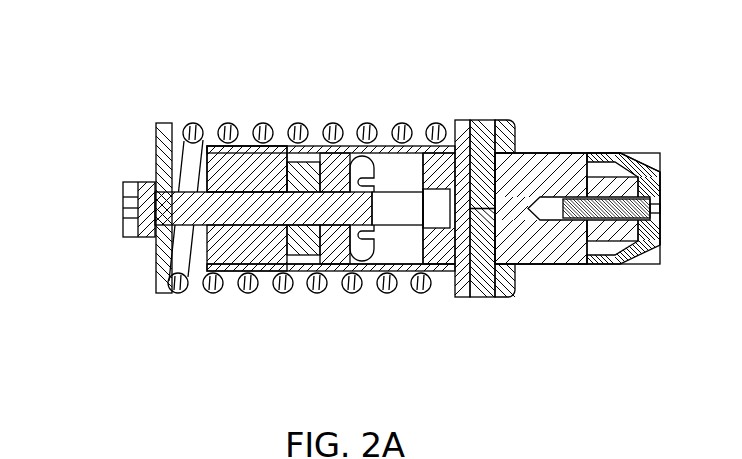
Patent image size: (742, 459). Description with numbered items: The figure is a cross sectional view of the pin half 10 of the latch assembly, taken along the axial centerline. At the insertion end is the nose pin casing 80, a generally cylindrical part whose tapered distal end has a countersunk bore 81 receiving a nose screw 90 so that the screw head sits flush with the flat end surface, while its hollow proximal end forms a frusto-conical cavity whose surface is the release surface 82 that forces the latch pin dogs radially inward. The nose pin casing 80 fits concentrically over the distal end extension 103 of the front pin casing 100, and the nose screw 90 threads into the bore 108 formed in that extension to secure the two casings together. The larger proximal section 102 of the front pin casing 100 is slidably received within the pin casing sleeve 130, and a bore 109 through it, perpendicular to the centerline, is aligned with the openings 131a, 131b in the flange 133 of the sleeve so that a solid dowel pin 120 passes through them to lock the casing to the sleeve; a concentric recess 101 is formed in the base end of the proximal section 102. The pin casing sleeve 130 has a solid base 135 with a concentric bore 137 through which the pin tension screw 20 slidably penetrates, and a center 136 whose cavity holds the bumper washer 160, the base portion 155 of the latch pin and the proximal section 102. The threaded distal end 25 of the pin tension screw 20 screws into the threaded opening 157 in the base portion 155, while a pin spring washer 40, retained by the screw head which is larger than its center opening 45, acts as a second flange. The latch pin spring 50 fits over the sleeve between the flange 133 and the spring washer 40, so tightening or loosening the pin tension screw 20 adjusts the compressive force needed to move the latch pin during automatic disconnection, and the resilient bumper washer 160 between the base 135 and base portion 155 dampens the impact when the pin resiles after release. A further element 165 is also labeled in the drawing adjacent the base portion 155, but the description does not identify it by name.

The pin half 10 is at (295, 72).
The pin tension screw 20 is at (123, 226).
The distal end of pin tension screw 25 is at (392, 180).
The pin spring washer 40 is at (160, 126).
The center opening 45 is at (130, 183).
The latch pin spring 50 is at (272, 282).
The nose pin casing 80 is at (662, 173).
The bore 81 is at (662, 243).
The release surface 82 is at (642, 164).
The nose screw 90 is at (662, 199).
The front pin casing 100 is at (583, 262).
The concentric recess 101 is at (438, 216).
The proximal section 102 is at (553, 168).
The distal end extension 103 is at (613, 177).
The bore 108 is at (535, 214).
The bore 109 is at (498, 235).
The solid dowel pin 120 is at (480, 120).
The pin casing sleeve 130 is at (302, 150).
The opening 131a is at (490, 122).
The opening 131b is at (474, 297).
The flange 133 is at (458, 120).
The pin casing sleeve base 135 is at (245, 148).
The center 136 is at (413, 150).
The concentric bore 137 is at (200, 136).
The base portion 155 is at (342, 250).
The threaded opening 157 is at (327, 190).
The bumper washer 160 is at (278, 280).
The seal 165 is at (326, 266).